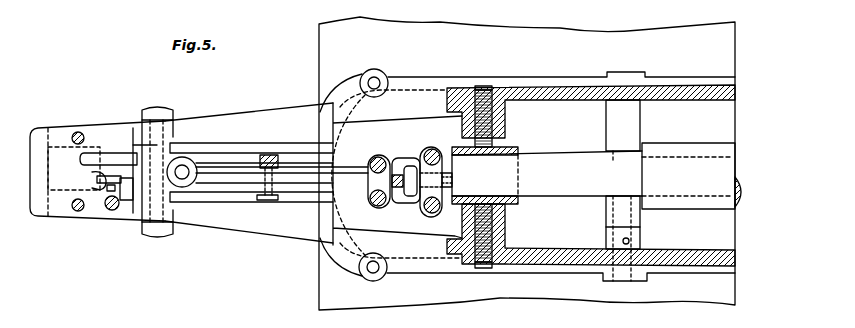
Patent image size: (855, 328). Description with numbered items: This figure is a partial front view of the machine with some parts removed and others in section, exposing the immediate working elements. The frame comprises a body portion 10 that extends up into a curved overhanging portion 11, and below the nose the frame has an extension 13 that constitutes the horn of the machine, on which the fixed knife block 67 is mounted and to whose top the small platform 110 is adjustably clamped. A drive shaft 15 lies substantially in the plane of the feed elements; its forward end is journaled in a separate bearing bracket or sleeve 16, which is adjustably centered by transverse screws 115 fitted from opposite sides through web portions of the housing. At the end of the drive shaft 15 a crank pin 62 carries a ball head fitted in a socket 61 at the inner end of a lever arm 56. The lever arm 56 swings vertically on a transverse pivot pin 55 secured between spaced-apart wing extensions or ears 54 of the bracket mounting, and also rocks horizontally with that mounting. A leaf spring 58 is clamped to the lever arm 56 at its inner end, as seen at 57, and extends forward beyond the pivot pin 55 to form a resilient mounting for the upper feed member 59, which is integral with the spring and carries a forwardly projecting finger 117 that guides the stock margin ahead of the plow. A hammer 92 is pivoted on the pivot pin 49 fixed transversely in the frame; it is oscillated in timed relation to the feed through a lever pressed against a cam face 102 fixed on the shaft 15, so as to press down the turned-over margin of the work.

The body portion 10 is at (652, 37).
The curved overhanging portion 11 is at (732, 94).
The extension 13 is at (52, 130).
The drive shaft 15 is at (567, 158).
The bearing bracket or sleeve 16 is at (527, 141).
The pivot pin 49 is at (156, 112).
The wing extensions or ears 54 is at (305, 167).
The pivot pin 55 is at (270, 154).
The lever arm 56 is at (227, 190).
The clamp 57 is at (390, 162).
The leaf spring 58 is at (347, 167).
The upper feed member 59 is at (88, 170).
The socket 61 is at (425, 190).
The crank pin 62 is at (448, 182).
The fixed knife block 67 is at (124, 198).
The hammer 92 is at (106, 155).
The cam face 102 is at (687, 152).
The platform 110 is at (46, 214).
The transverse screws 115 is at (488, 88).
The forwardly projecting finger 117 is at (100, 188).